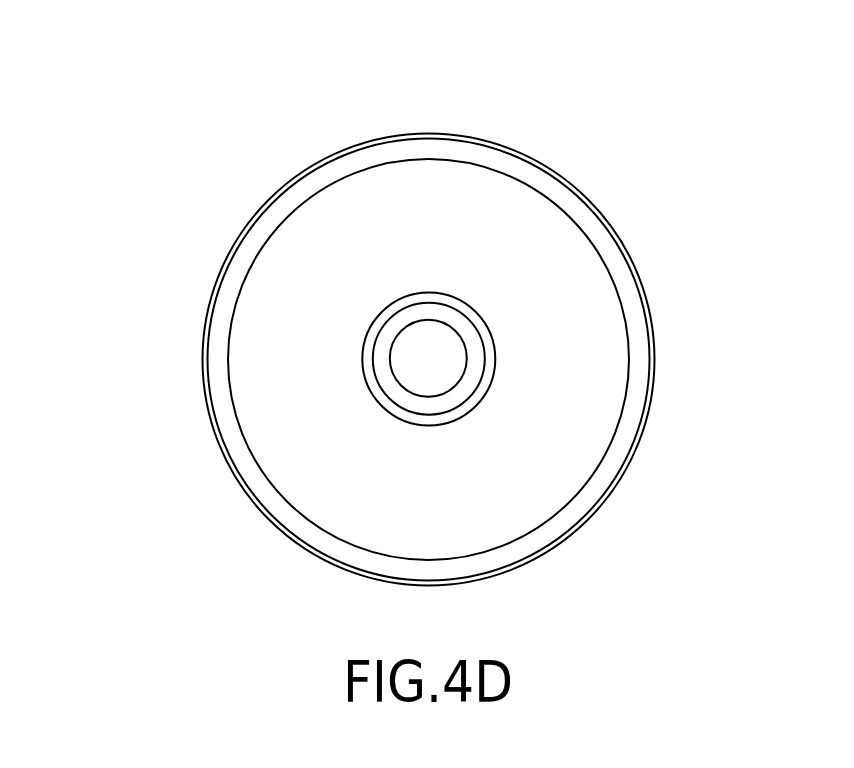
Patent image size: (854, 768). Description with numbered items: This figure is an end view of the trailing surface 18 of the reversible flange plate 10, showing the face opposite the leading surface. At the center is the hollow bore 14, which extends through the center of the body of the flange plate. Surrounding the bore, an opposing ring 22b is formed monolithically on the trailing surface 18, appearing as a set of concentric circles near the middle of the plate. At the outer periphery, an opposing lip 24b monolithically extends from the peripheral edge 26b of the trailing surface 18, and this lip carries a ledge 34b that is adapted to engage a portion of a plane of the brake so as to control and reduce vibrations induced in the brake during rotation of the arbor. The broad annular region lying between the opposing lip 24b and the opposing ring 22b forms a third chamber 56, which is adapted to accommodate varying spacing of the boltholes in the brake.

The reversible flange plate 10 is at (143, 199).
The hollow bore 14 is at (417, 373).
The trailing surface 18 is at (265, 495).
The opposing ring 22b is at (465, 330).
The opposing lip 24b is at (637, 315).
The peripheral edge 26b is at (607, 495).
The ledge 34b is at (573, 205).
The third chamber 56 is at (587, 370).